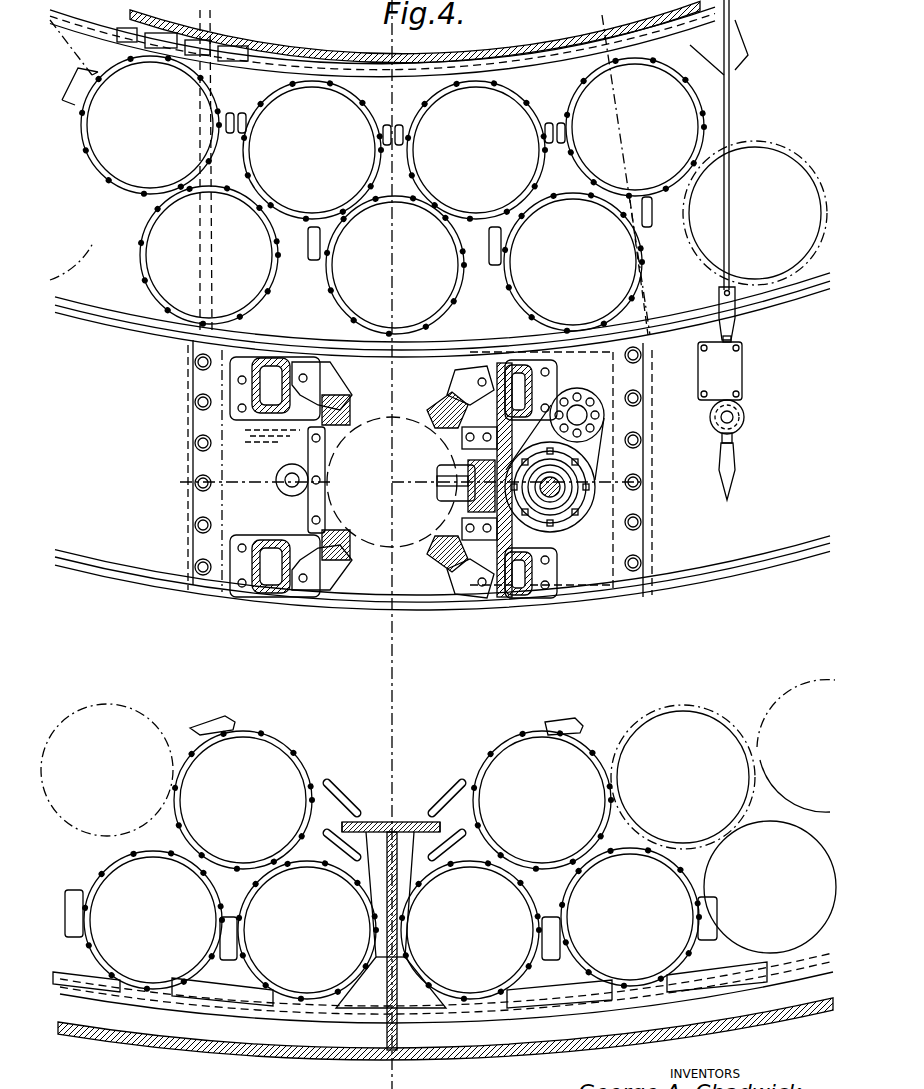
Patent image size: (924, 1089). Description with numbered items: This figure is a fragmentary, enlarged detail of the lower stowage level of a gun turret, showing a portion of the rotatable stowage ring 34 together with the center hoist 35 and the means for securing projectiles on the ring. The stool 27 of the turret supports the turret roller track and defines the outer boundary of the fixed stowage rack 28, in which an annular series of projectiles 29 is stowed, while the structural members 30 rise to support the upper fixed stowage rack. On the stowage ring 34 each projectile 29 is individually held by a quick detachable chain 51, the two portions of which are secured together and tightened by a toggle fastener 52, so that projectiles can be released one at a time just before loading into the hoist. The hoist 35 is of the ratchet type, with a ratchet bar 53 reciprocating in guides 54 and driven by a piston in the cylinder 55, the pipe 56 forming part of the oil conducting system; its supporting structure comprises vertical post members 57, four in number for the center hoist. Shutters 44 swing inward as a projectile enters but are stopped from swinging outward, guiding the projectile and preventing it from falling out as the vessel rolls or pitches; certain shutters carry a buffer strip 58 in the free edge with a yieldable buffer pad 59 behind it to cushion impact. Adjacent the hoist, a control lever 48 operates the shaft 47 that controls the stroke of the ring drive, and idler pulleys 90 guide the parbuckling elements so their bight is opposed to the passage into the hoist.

The stool 27 is at (318, 1052).
The fixed stowage rack 28 is at (440, 727).
The projectile 29 is at (334, 136).
The structural member 30 is at (377, 822).
The rotatable stowage ring 34 is at (502, 332).
The center hoist 35 is at (376, 584).
The shutter 44 is at (347, 397).
The shaft 47 is at (729, 205).
The control lever 48 is at (727, 475).
The quick detachable chain 51 is at (326, 303).
The toggle fastener 52 is at (462, 330).
The ratchet bar 53 is at (437, 500).
The guide 54 is at (462, 445).
The cylinder 55 is at (563, 512).
The pipe 56 is at (595, 412).
The vertical post member 57 is at (268, 358).
The buffer strip 58 is at (427, 412).
The yieldable buffer pad 59 is at (447, 390).
The idler pulley 90 is at (280, 480).